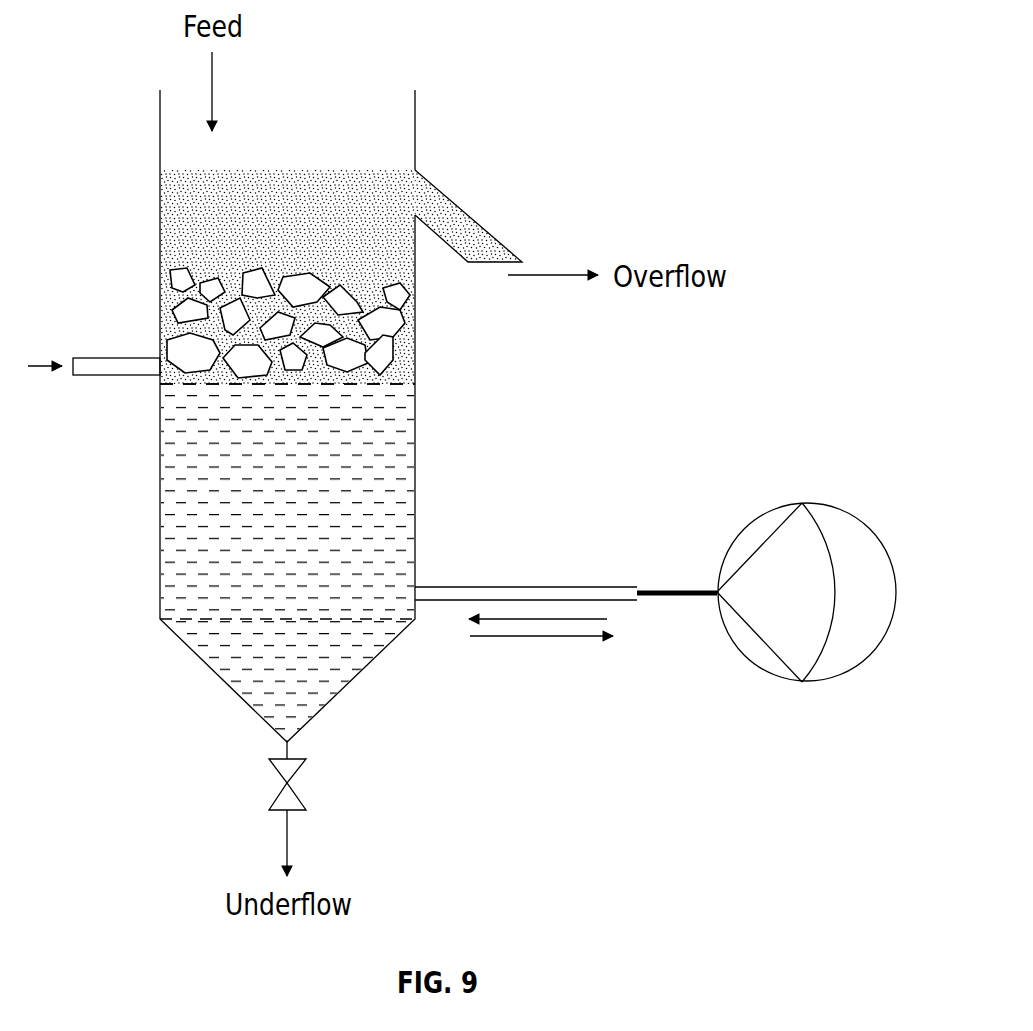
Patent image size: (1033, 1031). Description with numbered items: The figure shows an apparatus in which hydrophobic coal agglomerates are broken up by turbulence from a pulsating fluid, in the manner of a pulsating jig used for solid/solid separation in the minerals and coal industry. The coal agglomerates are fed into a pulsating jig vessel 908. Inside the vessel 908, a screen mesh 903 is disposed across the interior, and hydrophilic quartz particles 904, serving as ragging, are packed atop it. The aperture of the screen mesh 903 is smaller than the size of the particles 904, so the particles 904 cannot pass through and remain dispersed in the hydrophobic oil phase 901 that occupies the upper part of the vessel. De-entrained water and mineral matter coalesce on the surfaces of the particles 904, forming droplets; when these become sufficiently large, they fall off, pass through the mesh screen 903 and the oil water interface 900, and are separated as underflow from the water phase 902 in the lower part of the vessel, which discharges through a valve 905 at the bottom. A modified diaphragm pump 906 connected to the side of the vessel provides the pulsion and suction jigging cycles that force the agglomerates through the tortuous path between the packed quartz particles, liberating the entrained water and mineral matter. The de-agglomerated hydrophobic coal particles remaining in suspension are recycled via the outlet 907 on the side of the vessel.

The oil water interface 900 is at (288, 387).
The hydrophobic oil phase 901 is at (178, 197).
The water phase 902 is at (182, 578).
The screen mesh 903 is at (387, 388).
The hydrophilic quartz particles 904 is at (393, 322).
The underflow valve 905 is at (280, 785).
The modified diaphragm pump 906 is at (752, 658).
The outlet 907 is at (118, 366).
The pulsating jig vessel 908 is at (160, 100).